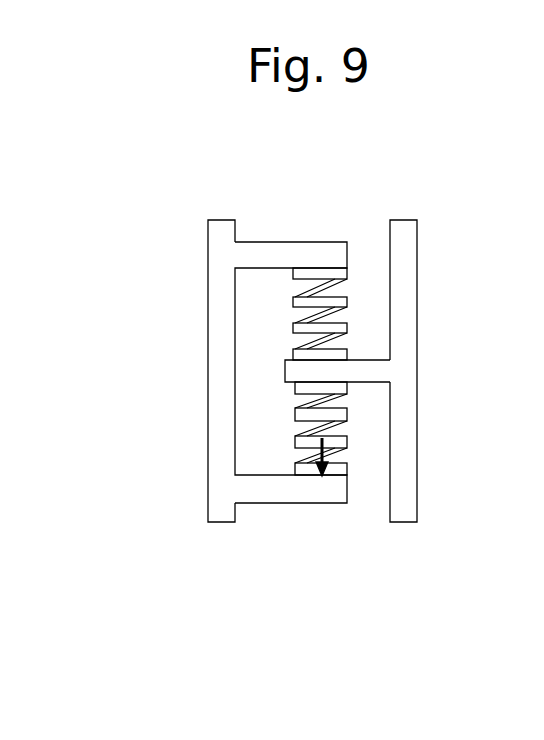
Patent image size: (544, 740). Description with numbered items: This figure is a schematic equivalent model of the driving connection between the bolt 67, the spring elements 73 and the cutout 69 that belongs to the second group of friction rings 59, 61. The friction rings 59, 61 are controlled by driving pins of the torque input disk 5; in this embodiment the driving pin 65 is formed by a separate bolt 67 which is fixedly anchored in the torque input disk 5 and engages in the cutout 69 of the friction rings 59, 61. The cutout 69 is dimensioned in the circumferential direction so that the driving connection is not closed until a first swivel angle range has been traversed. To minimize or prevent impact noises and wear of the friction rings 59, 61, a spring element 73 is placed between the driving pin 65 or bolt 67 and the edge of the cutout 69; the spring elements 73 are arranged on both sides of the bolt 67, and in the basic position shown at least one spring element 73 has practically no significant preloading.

The torque input disk 5 is at (402, 303).
The friction ring 59 is at (181, 371).
The friction ring 61 is at (220, 422).
The driving pin 65 is at (295, 370).
The bolt 67 is at (377, 372).
The cutout 69 is at (268, 285).
The spring element 73 is at (295, 412).